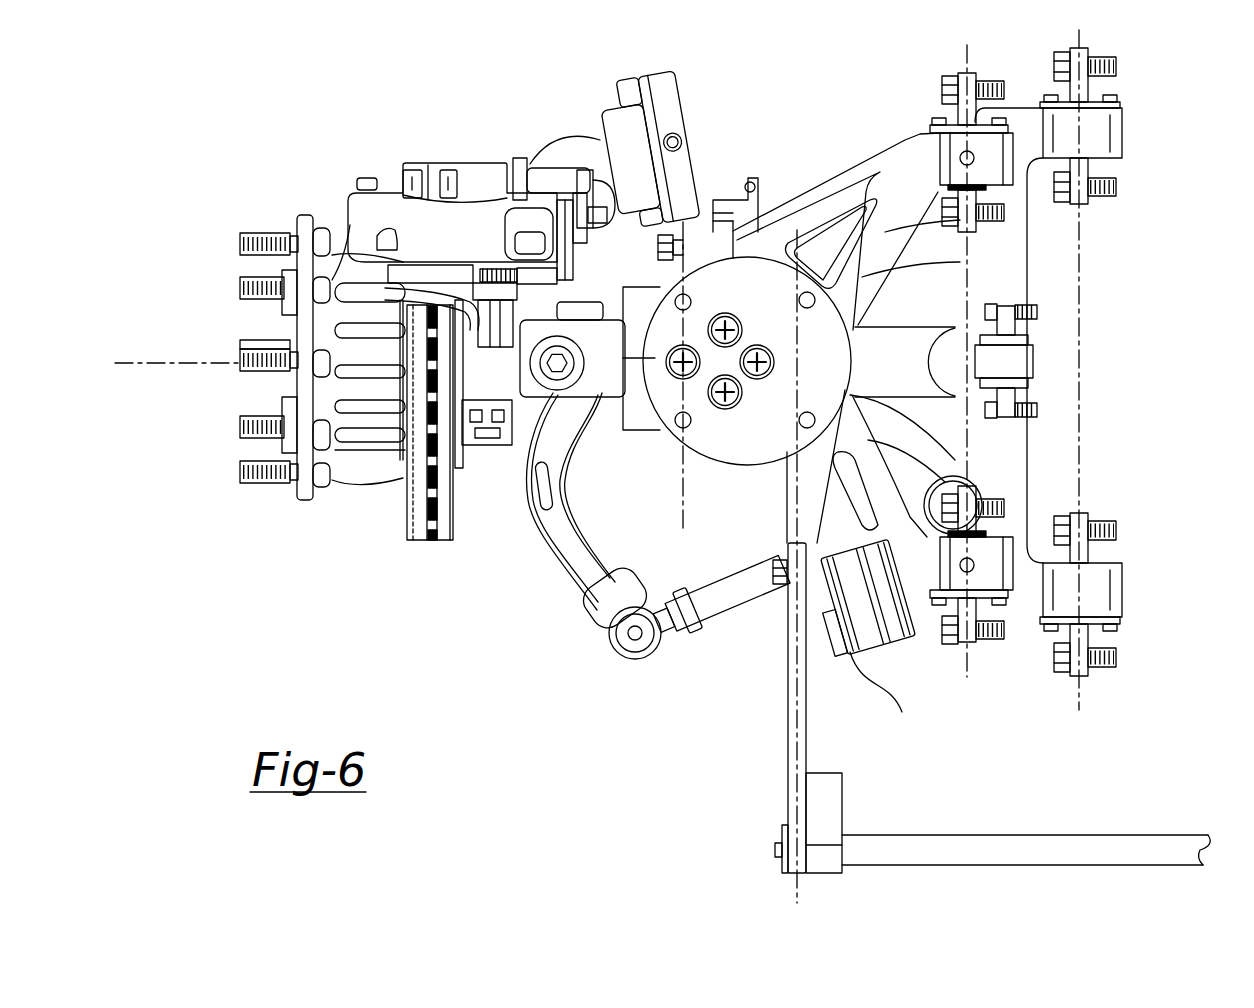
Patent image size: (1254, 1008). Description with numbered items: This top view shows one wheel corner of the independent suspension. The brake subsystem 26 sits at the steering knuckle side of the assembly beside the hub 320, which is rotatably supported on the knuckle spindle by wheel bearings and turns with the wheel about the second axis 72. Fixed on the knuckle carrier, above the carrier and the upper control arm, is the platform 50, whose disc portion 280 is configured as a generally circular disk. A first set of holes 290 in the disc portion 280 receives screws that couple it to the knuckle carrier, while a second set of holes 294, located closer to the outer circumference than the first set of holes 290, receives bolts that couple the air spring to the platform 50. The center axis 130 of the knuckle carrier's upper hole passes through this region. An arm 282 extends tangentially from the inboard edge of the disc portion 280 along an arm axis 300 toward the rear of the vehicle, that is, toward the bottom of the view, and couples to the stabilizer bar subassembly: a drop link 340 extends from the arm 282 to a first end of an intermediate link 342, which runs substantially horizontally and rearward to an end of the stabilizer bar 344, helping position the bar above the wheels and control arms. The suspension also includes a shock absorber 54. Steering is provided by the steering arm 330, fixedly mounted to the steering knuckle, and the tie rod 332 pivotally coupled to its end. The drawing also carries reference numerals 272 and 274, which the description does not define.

The brake subsystem 26 is at (350, 199).
The second axis 72 is at (140, 363).
The hub 320 is at (340, 460).
The platform 50 is at (685, 374).
The disc portion 280 is at (685, 374).
The first set of holes 290 is at (742, 325).
The second set of holes 294 is at (800, 297).
The center axis 130 is at (680, 518).
The arm 282 is at (775, 526).
The shock absorber 54 is at (914, 370).
The first pivot axis 272 is at (968, 663).
The second pivot axis 274 is at (1079, 697).
The steering arm 330 is at (545, 533).
The tie rod 332 is at (749, 607).
The drop link 340 is at (873, 632).
The intermediate link 342 is at (806, 702).
The arm axis 300 is at (797, 880).
The stabilizer bar 344 is at (1055, 835).